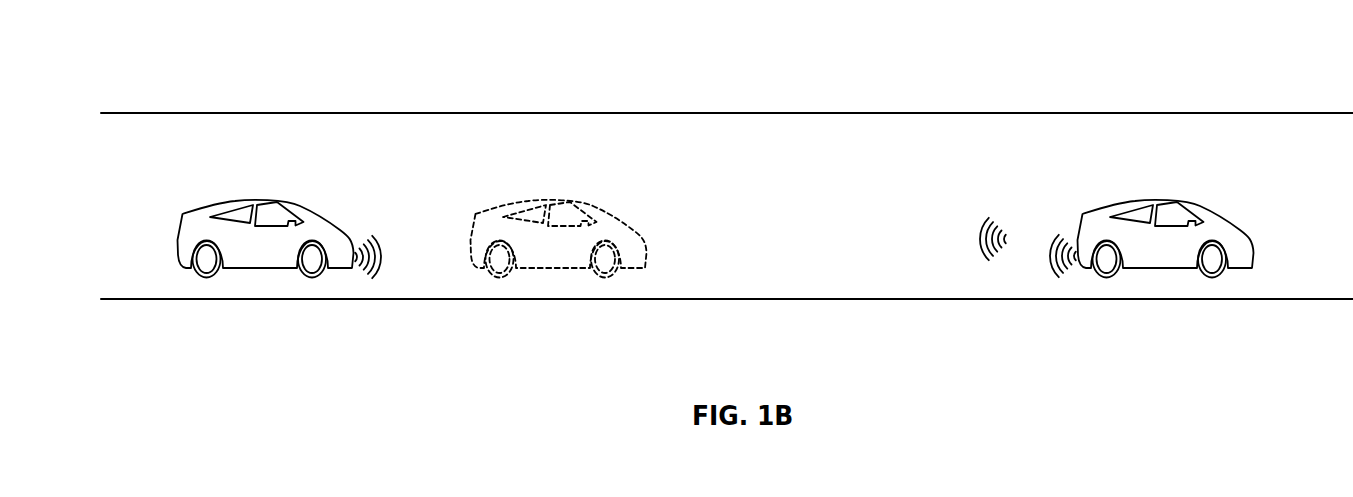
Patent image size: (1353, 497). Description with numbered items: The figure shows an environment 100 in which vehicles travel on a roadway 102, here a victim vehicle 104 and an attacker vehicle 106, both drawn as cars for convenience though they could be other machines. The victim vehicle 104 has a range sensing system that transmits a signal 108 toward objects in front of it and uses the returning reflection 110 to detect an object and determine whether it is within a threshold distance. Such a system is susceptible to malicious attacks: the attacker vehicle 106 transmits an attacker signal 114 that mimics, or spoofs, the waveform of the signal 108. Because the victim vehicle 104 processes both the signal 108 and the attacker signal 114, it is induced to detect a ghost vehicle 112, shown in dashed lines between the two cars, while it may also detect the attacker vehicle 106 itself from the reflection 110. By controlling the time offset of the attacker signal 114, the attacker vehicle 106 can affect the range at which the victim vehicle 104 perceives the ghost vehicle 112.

The environment 100 is at (1213, 84).
The roadway 102 is at (807, 344).
The victim vehicle 104 is at (320, 182).
The attacker vehicle 106 is at (1222, 182).
The signal 108 is at (392, 202).
The reflection 110 is at (1004, 182).
The ghost vehicle 112 is at (651, 182).
The attacker signal 114 is at (1072, 202).